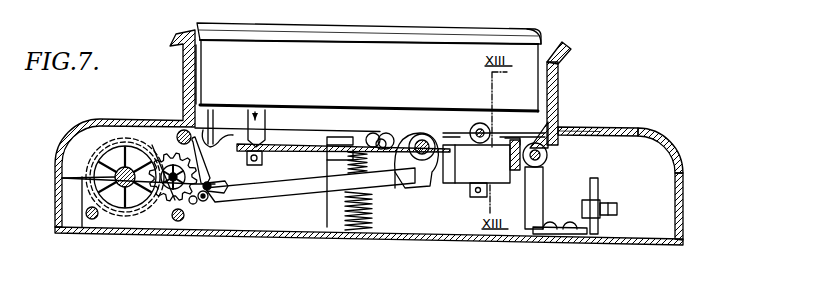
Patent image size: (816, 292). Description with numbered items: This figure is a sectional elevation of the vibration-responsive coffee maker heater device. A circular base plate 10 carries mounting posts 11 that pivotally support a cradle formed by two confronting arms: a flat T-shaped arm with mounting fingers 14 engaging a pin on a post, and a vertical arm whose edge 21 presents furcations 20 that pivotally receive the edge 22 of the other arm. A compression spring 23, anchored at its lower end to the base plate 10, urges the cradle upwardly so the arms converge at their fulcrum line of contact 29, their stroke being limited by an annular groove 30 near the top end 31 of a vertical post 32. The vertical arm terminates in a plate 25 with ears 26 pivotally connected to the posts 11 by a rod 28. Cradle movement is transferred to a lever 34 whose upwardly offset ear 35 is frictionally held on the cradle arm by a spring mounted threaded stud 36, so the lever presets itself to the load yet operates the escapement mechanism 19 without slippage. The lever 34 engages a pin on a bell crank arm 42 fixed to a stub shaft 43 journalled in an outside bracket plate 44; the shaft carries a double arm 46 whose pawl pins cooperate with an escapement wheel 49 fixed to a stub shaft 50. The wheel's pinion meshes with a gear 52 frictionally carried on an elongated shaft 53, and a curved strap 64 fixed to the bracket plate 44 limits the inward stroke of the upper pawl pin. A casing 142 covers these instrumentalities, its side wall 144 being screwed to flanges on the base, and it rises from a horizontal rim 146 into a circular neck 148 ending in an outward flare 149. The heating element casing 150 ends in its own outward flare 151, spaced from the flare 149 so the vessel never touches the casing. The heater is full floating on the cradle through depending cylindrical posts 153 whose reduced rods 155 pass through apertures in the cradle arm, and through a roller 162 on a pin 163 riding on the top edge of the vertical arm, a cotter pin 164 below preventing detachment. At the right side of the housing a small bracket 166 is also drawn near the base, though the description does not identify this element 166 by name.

The base plate 10 is at (660, 245).
The mounting post 11 is at (540, 187).
The mounting finger 14 is at (213, 130).
The escapement mechanism 19 is at (155, 135).
The furcations 20 is at (381, 139).
The edge of cradle arm 21 is at (403, 187).
The edge of cradle arm 22 is at (395, 138).
The compression spring 23 is at (368, 214).
The plate 25 is at (522, 148).
The ear 26 is at (550, 155).
The rod 28 is at (562, 136).
The fulcrum line of contact 29 is at (373, 133).
The annular groove 30 is at (325, 161).
The top end of post 31 is at (342, 134).
The vertical post 32 is at (333, 208).
The lever 34 is at (262, 190).
The offset ear 35 is at (445, 165).
The threaded stud 36 is at (421, 143).
The bell crank arm 42 is at (228, 198).
The stub shaft 43 is at (202, 200).
The outside bracket plate 44 is at (147, 220).
The double arm 46 is at (200, 182).
The escapement wheel 49 is at (163, 223).
The stub shaft 50 is at (152, 145).
The gear 52 is at (110, 135).
The elongated shaft 53 is at (57, 178).
The curved strap 64 is at (214, 138).
The casing 142 is at (683, 163).
The side wall 144 is at (683, 200).
The horizontal rim 146 is at (612, 126).
The circular neck 148 is at (560, 92).
The outward flare 149 is at (568, 48).
The heating element casing 150 is at (295, 52).
The outward flare 151 is at (537, 40).
The cylindrical post 153 is at (250, 108).
The reduced rod 155 is at (277, 147).
The roller 162 is at (489, 125).
The pin 163 is at (482, 130).
The cotter pin 164 is at (474, 189).
The bracket 166 is at (600, 192).